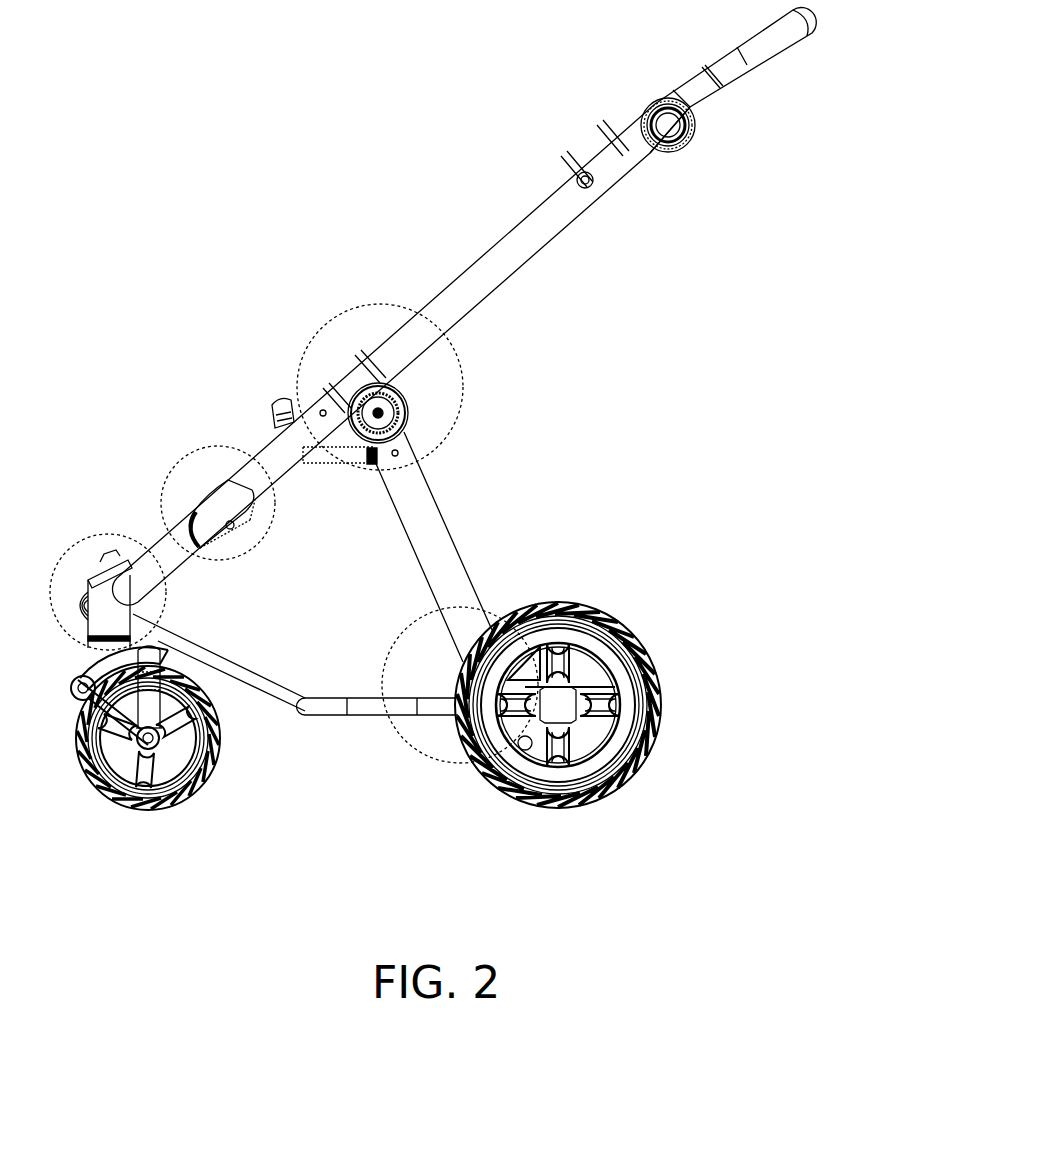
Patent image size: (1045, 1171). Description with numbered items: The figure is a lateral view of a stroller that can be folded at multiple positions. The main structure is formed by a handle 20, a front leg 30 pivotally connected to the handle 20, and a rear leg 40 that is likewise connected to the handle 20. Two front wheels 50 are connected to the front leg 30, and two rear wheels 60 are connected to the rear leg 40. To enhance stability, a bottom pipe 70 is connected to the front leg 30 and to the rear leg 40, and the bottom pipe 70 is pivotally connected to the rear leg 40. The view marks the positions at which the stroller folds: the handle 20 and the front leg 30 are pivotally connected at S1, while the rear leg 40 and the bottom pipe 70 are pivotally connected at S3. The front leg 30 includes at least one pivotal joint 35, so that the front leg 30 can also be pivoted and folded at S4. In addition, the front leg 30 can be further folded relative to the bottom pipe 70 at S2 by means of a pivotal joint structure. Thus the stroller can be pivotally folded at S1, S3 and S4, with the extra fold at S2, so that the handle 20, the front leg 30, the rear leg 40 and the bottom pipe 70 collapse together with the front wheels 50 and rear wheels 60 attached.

The handle 20 is at (543, 218).
The front leg 30 is at (167, 533).
The pivotal joint 35 is at (218, 507).
The rear leg 40 is at (452, 570).
The front wheels 50 is at (170, 800).
The rear wheels 60 is at (630, 770).
The bottom pipe 70 is at (263, 678).
The pivotal connection position of handle and front leg S1 is at (380, 376).
The folding position of front leg relative to bottom pipe S2 is at (108, 582).
The pivotal connection position of rear leg and bottom pipe S3 is at (460, 702).
The folding position of front leg S4 is at (218, 487).